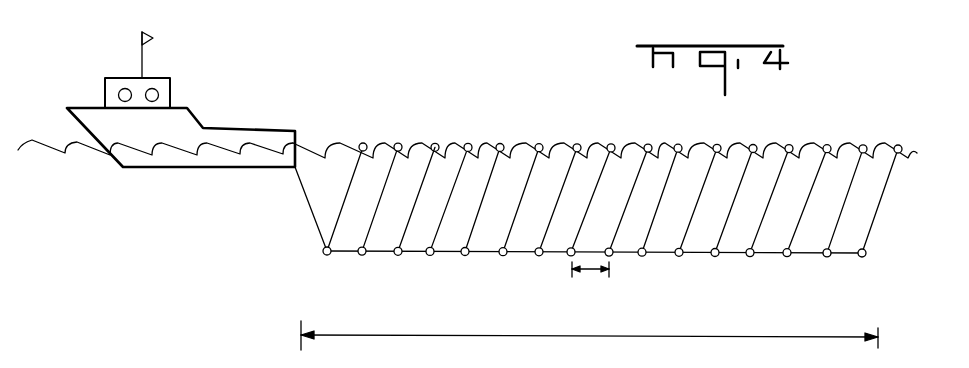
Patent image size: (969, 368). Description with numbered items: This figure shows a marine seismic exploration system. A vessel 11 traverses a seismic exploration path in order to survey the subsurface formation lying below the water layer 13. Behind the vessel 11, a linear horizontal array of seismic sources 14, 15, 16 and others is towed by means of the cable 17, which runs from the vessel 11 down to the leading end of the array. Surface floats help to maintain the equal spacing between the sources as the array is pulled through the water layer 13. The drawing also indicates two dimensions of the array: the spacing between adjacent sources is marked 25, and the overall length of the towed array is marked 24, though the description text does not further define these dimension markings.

The vessel 11 is at (152, 167).
The water layer 13 is at (538, 300).
The seismic source 14 is at (323, 252).
The seismic source 15 is at (361, 256).
The seismic source 16 is at (399, 256).
The cable 17 is at (306, 200).
The overall length dimension 24 is at (647, 338).
The unit spacing dimension 25 is at (598, 271).